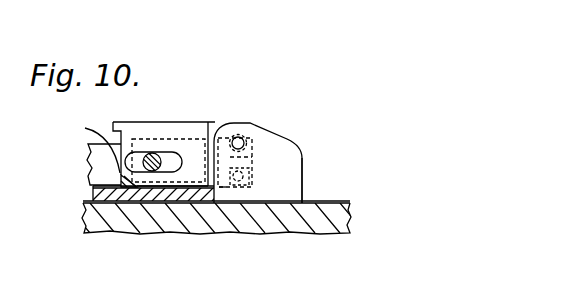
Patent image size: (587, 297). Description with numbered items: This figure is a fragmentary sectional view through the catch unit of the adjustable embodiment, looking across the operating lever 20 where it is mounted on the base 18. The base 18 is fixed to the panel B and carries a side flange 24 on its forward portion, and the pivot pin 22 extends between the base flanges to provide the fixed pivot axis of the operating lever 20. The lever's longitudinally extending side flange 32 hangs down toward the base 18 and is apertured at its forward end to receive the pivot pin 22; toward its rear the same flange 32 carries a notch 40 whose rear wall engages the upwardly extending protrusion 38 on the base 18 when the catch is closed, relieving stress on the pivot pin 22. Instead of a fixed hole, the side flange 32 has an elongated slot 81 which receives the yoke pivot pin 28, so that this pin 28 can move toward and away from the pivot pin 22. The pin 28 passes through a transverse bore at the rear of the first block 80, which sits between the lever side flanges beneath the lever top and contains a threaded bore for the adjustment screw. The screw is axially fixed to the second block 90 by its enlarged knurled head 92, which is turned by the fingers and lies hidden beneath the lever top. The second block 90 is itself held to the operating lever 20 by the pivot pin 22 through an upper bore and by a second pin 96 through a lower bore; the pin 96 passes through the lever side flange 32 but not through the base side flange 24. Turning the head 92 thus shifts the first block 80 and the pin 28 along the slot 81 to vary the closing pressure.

The base 18 is at (185, 204).
The operating lever 20 is at (202, 122).
The pivot pin 22 is at (244, 137).
The side flange 24 is at (303, 173).
The pivot pin 28 is at (150, 153).
The side flange 32 is at (96, 170).
The protrusion 38 is at (94, 203).
The notch 40 is at (92, 148).
The first block 80 is at (167, 138).
The elongated slot 81 is at (176, 162).
The second block 90 is at (253, 141).
The enlarged head 92 is at (222, 188).
The second pin 96 is at (254, 168).
The panel B is at (349, 233).